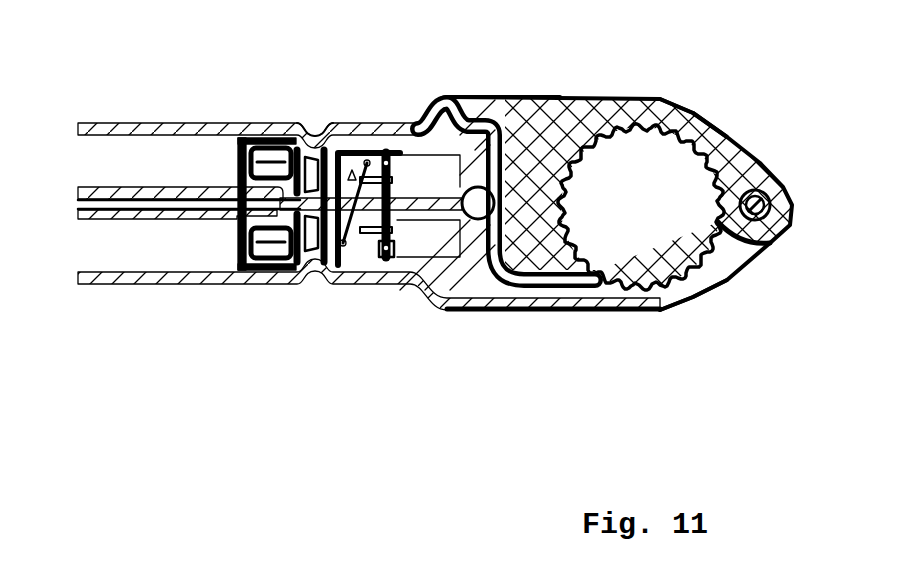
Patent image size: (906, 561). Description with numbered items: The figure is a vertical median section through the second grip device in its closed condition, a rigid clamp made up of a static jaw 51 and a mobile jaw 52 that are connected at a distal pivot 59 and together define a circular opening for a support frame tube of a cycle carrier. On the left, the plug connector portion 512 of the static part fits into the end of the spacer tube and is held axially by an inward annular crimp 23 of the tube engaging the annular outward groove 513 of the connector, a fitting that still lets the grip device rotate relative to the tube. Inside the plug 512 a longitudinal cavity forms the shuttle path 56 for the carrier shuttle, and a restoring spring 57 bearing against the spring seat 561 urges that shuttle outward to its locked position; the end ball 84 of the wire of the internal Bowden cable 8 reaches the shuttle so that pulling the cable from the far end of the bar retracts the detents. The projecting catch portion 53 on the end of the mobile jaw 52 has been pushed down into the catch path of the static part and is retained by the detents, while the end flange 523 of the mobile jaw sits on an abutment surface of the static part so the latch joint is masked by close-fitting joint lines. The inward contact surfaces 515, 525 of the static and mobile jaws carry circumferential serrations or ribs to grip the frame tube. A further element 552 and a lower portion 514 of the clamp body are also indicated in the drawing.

The Bowden cable 8 is at (108, 220).
The inward annular crimp 23 is at (318, 123).
The static jaw 51 is at (565, 310).
The mobile jaw 52 is at (593, 85).
The catch portion 53 is at (497, 272).
The shuttle path 56 is at (348, 170).
The restoring spring 57 is at (347, 268).
The distal pivot 59 is at (770, 188).
The end ball 84 is at (466, 176).
The plug connector portion 512 is at (250, 130).
The annular outward groove 513 is at (322, 272).
The lower head portion 514 is at (692, 288).
The inward contact surface 515 is at (655, 282).
The end flange 523 is at (472, 96).
The inward contact surface 525 is at (677, 135).
The slider 552 is at (423, 287).
The spring seat 561 is at (318, 268).